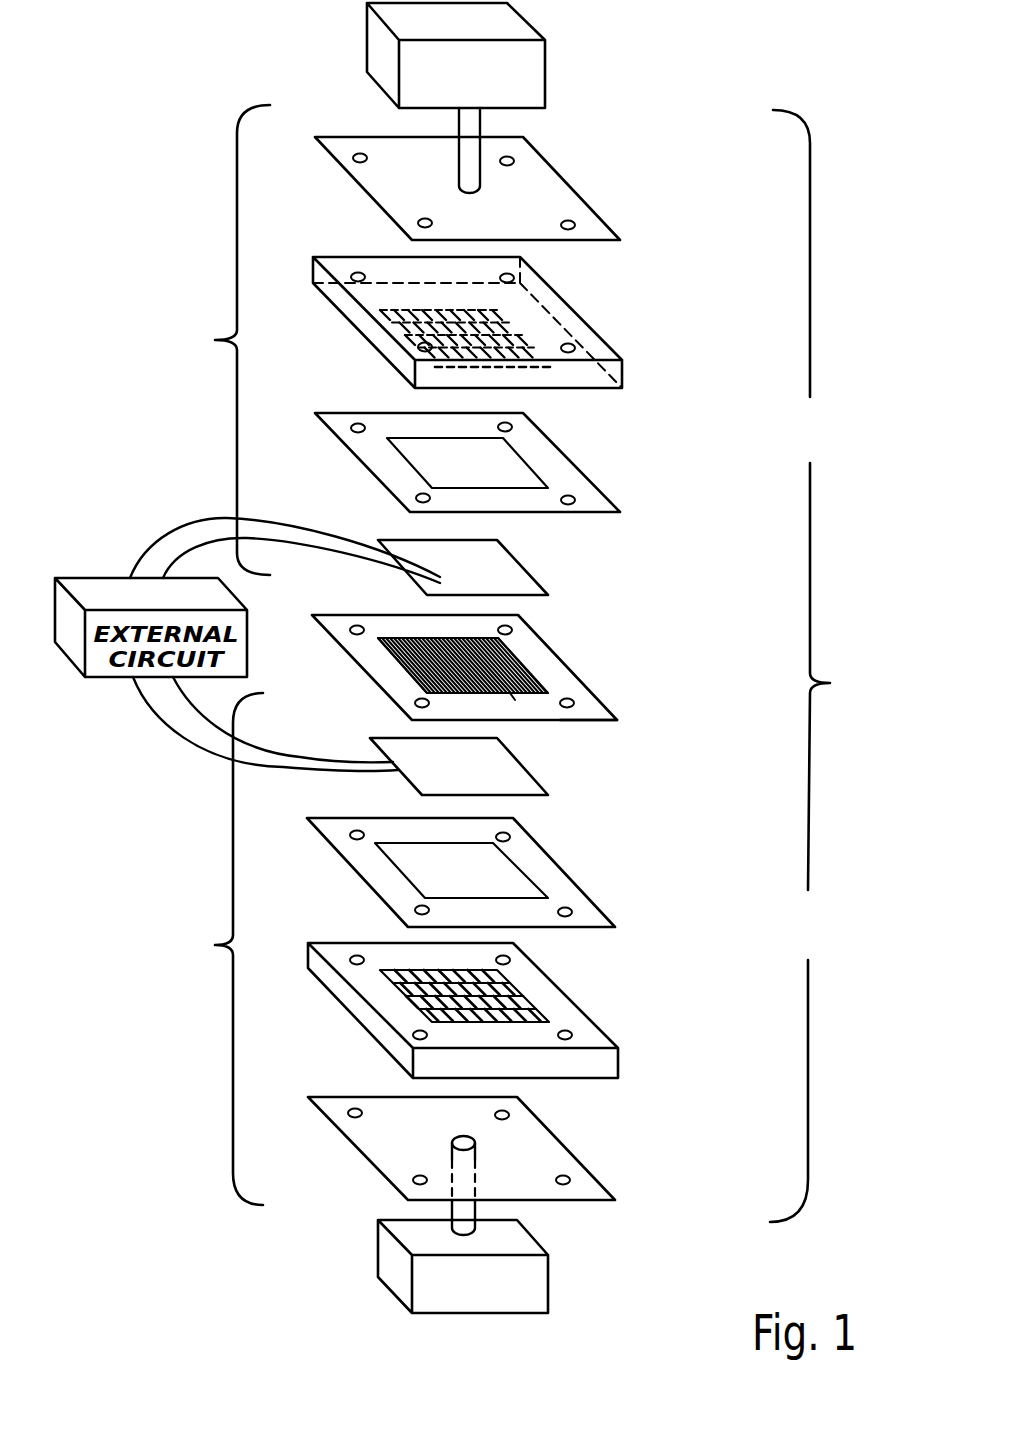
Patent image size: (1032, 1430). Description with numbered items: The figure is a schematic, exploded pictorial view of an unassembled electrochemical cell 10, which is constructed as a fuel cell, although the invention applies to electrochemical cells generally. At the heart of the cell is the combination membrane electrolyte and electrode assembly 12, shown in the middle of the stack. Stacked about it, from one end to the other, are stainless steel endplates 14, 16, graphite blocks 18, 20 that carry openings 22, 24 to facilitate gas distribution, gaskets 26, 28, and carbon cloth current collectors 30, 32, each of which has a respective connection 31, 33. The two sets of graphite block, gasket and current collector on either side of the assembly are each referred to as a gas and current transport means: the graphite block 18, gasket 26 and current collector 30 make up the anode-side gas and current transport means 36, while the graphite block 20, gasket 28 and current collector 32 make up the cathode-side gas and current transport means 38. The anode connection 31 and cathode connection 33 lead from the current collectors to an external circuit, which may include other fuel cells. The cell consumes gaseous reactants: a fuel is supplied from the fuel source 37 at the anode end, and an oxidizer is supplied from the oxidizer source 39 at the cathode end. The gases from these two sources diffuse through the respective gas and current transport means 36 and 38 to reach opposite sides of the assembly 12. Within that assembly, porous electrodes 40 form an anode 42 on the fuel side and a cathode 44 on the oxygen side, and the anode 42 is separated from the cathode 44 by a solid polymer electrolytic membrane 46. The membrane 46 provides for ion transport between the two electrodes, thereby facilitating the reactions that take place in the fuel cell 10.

The electrochemical cell 10 is at (814, 666).
The membrane electrolyte and electrode assembly 12 is at (516, 683).
The stainless steel endplate 14 is at (567, 1157).
The stainless steel endplate 16 is at (583, 197).
The graphite block 18 is at (492, 1010).
The graphite block 20 is at (508, 326).
The openings 22 is at (520, 997).
The openings 24 is at (507, 333).
The gasket 26 is at (585, 892).
The gasket 28 is at (585, 477).
The carbon cloth current collector 30 is at (533, 797).
The anode connection 31 is at (343, 768).
The carbon cloth current collector 32 is at (520, 563).
The cathode connection 33 is at (327, 542).
The gas and current transport means 36 is at (210, 949).
The fuel source 37 is at (550, 1280).
The gas and current transport means 38 is at (211, 340).
The oxidizer source 39 is at (527, 15).
The porous electrodes 40 is at (549, 683).
The anode 42 is at (510, 693).
The cathode 44 is at (507, 663).
The solid polymer electrolytic membrane 46 is at (607, 707).